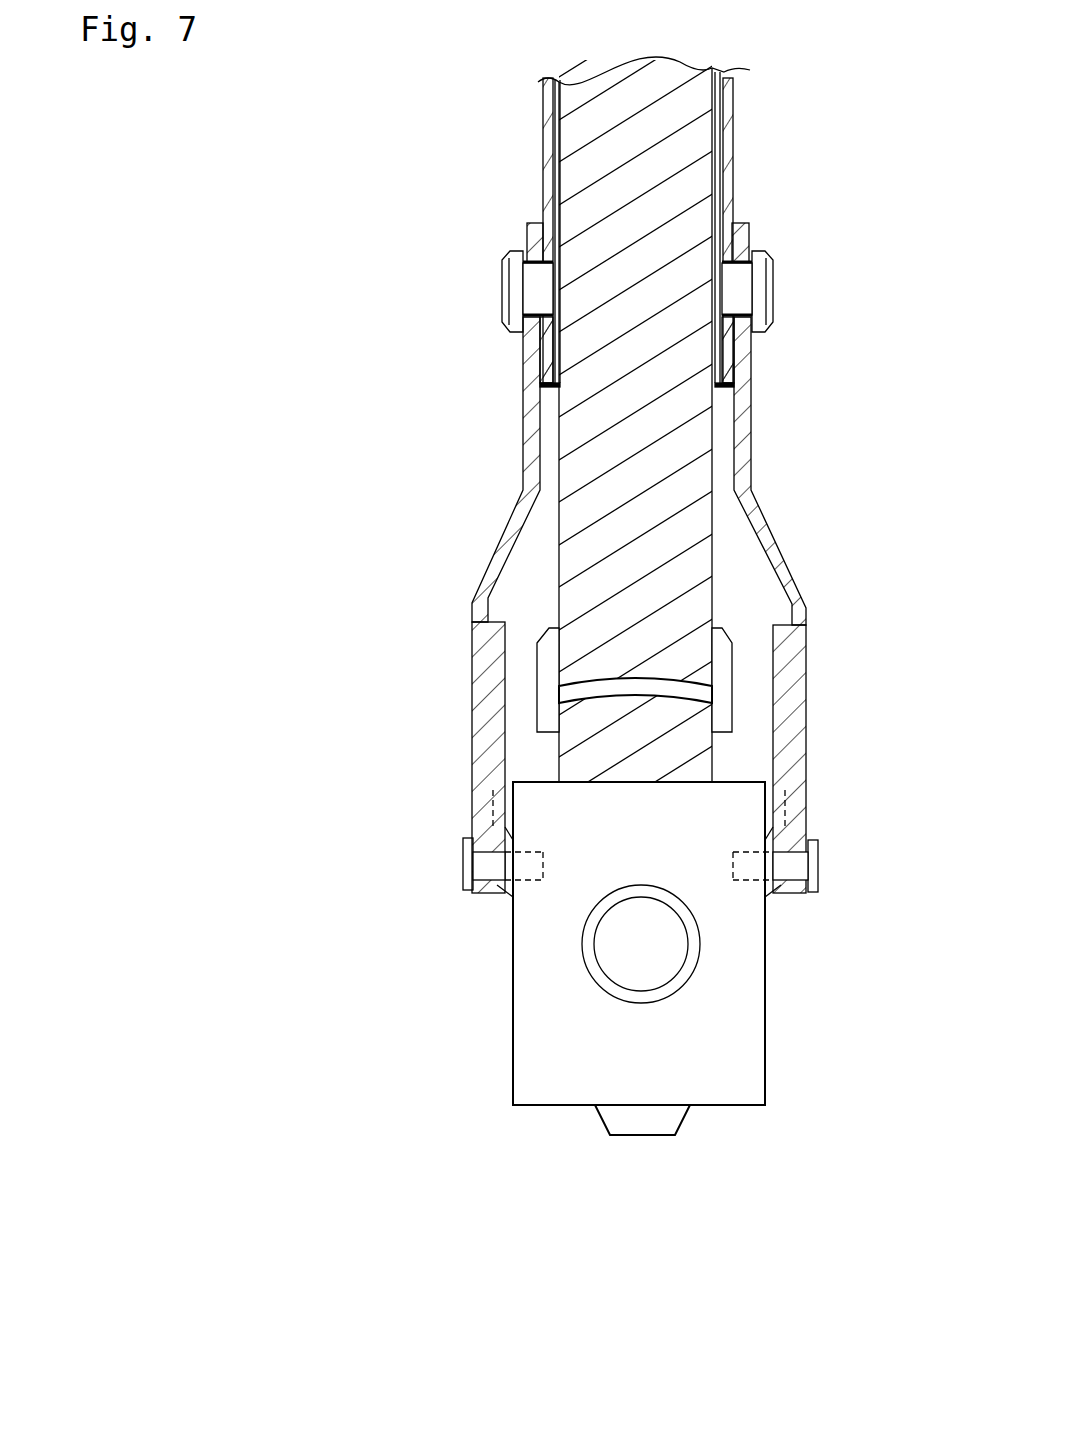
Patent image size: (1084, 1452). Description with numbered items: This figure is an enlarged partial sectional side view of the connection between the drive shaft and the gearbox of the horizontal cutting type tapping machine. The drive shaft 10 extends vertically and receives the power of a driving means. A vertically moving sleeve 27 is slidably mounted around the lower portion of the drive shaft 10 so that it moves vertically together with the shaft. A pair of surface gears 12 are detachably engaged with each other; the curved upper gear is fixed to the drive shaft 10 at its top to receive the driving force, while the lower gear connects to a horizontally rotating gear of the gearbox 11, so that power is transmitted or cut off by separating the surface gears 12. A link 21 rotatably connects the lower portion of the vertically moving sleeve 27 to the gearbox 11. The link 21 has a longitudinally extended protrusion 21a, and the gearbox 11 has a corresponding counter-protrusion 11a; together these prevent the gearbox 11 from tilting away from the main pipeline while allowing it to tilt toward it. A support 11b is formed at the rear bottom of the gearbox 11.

The drive shaft 10 is at (650, 463).
The vertically moving sleeve 27 is at (733, 130).
The link 21 is at (525, 459).
The longitudinally extended protrusion 21a is at (497, 659).
The surface gears 12 is at (708, 694).
The gearbox 11 is at (723, 1047).
The counter-protrusion 11a is at (473, 837).
The support 11b is at (642, 1120).